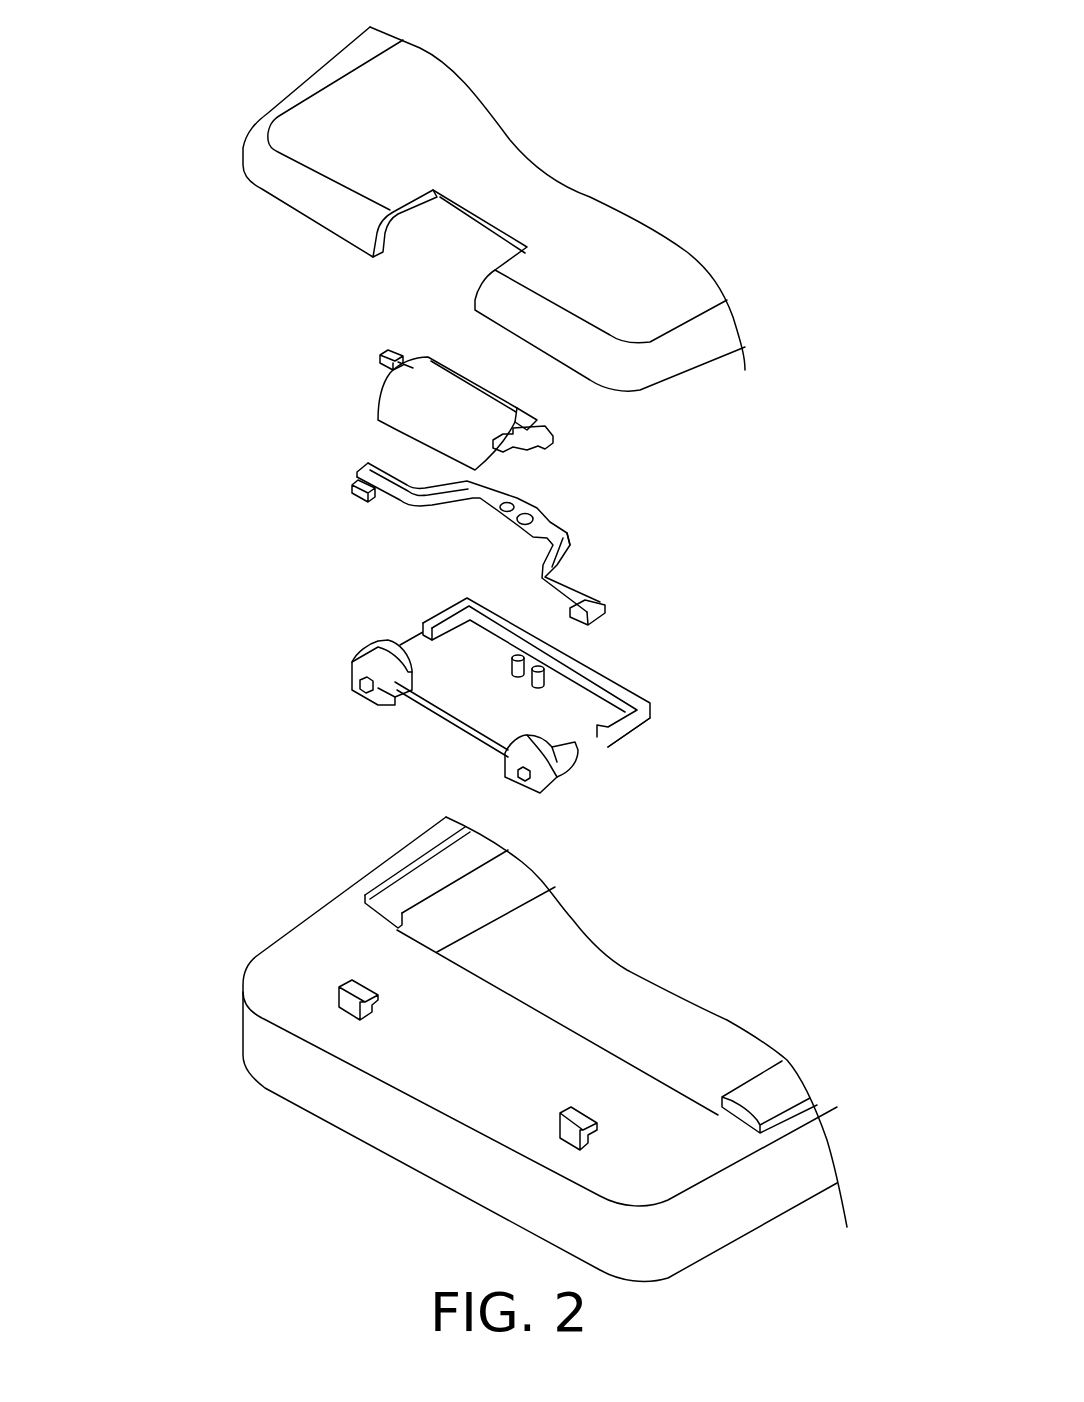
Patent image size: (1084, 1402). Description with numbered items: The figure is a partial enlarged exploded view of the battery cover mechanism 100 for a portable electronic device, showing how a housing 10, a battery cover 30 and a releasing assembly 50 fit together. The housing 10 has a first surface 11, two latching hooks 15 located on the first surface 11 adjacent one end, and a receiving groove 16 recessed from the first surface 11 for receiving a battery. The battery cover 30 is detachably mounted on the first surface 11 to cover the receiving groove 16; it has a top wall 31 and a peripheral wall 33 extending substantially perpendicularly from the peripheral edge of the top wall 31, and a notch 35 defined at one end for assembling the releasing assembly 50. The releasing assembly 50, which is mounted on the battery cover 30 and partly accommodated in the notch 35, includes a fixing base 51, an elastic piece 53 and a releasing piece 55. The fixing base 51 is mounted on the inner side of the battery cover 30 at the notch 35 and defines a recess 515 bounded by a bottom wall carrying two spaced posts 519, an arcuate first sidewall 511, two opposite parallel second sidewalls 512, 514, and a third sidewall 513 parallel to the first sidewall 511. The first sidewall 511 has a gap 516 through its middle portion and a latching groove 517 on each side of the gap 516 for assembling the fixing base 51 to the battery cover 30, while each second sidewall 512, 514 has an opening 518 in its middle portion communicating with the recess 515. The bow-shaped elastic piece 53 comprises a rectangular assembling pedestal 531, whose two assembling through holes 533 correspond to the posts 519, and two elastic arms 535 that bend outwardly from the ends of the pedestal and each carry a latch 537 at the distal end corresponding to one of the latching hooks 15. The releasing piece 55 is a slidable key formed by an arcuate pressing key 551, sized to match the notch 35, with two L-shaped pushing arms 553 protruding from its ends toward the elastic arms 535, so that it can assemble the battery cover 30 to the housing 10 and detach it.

The battery cover mechanism 100 is at (527, 60).
The battery cover 30 is at (481, 204).
The top wall 31 is at (633, 252).
The peripheral wall 33 is at (718, 336).
The notch 35 is at (455, 250).
The releasing assembly 50 is at (272, 360).
The releasing piece 55 is at (415, 388).
The pressing key 551 is at (444, 412).
The pushing arms 553 is at (391, 352).
The elastic piece 53 is at (483, 544).
The assembling pedestal 531 is at (528, 510).
The assembling through holes 533 is at (503, 508).
The elastic arms 535 is at (558, 560).
The latch 537 is at (608, 608).
The fixing base 51 is at (503, 706).
The first sidewall 511 is at (380, 688).
The second sidewall 512 is at (630, 729).
The third sidewall 513 is at (520, 606).
The second sidewall 514 is at (445, 612).
The recess 515 is at (560, 710).
The gap 516 is at (443, 720).
The latching groove 517 is at (522, 790).
The opening 518 is at (418, 642).
The posts 519 is at (545, 664).
The housing 10 is at (537, 1049).
The first surface 11 is at (470, 1060).
The latching hooks 15 is at (352, 983).
The receiving groove 16 is at (582, 988).